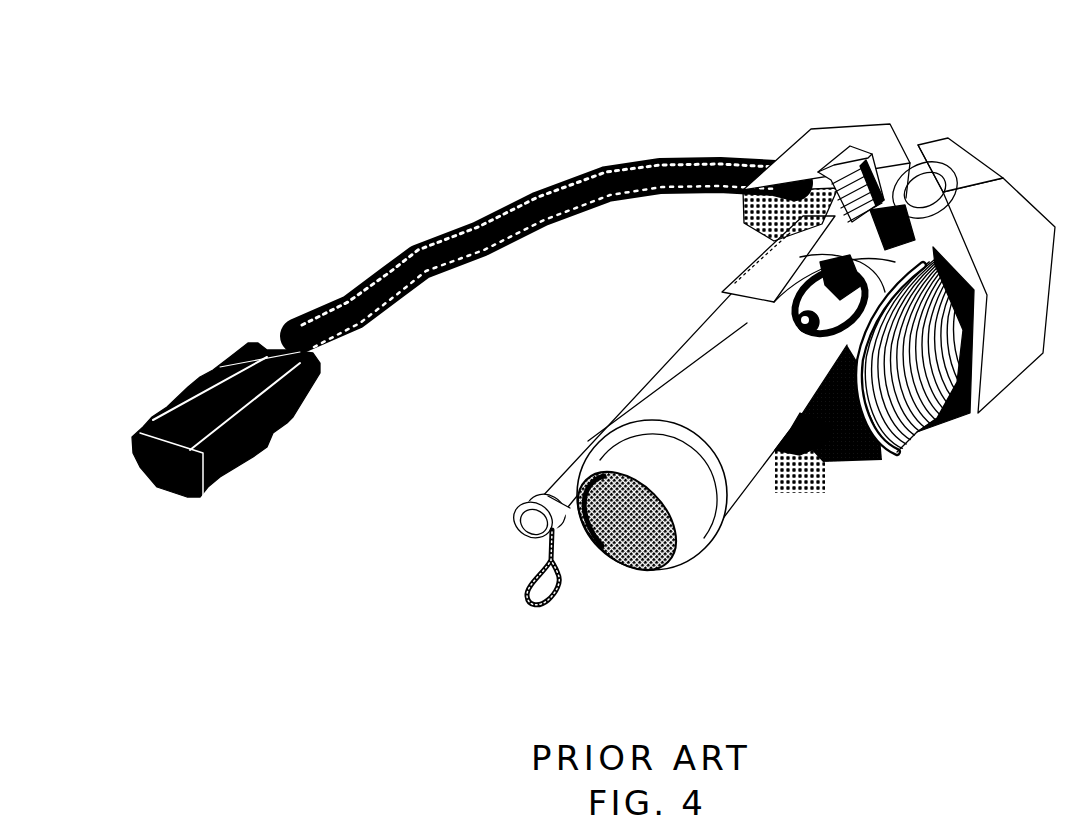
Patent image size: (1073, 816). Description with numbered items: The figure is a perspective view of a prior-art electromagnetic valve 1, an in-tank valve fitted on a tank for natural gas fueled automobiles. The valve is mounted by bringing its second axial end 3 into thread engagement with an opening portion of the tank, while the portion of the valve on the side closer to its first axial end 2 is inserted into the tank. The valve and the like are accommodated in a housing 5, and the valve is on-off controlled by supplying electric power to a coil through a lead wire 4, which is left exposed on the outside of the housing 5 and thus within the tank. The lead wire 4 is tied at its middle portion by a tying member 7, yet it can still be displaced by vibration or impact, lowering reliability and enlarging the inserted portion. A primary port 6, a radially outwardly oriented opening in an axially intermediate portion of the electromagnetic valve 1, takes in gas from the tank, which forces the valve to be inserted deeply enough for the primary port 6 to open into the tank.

The electromagnetic valve 1 is at (766, 333).
The first axial end 2 is at (693, 517).
The second axial end 3 is at (1003, 375).
The lead wire 4 is at (557, 600).
The housing 5 is at (680, 403).
The primary port 6 is at (743, 342).
The tying member 7 is at (533, 500).